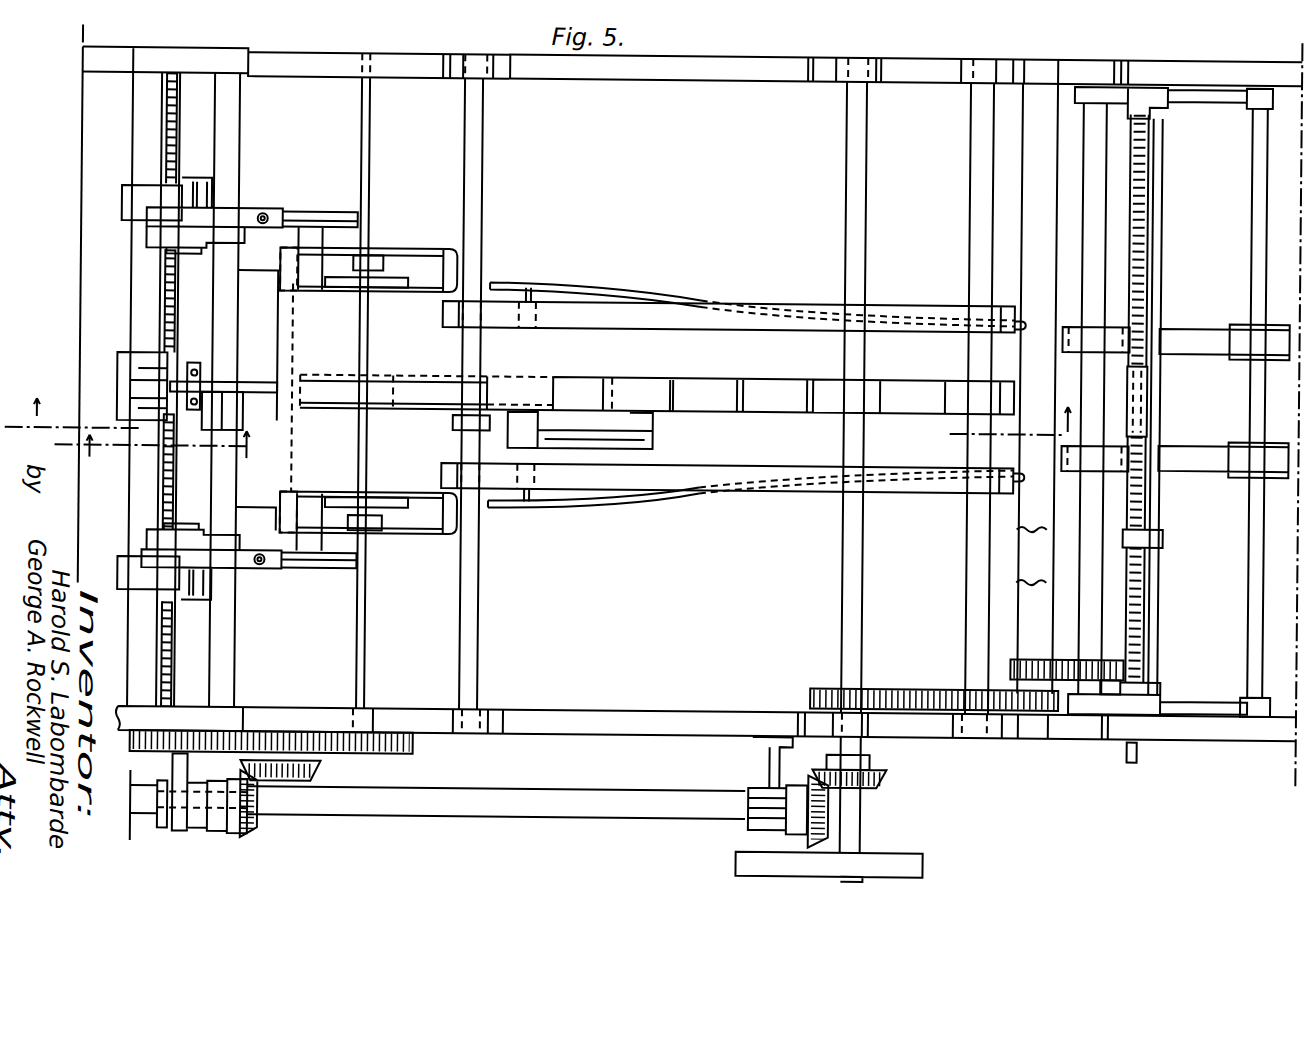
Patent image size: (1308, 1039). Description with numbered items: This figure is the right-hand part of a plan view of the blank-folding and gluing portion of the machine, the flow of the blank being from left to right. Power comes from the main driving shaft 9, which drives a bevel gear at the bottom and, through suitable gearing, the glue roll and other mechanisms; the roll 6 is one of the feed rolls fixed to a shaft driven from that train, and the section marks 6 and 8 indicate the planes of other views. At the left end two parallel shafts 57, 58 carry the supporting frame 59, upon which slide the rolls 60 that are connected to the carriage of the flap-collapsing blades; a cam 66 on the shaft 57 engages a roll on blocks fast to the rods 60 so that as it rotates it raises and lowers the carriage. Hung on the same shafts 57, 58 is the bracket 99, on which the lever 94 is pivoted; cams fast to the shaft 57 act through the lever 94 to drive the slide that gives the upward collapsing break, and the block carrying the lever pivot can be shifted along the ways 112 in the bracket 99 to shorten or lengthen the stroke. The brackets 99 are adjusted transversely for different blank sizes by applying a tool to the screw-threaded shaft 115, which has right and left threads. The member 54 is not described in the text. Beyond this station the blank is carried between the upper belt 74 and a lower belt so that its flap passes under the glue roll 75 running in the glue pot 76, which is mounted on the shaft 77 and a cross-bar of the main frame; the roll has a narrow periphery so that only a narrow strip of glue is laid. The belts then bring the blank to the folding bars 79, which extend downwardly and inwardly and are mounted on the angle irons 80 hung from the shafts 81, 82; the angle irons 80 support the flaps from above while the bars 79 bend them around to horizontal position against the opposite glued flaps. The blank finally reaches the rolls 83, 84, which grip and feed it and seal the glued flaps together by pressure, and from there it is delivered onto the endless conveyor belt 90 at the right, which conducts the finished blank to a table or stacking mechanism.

The roll 6 is at (542, 402).
The section line 8- 8 is at (153, 447).
The main driving shaft 9 is at (500, 820).
The plate 54 is at (264, 400).
The shaft 57 is at (227, 636).
The shaft 58 is at (142, 327).
The supporting frame 59 is at (146, 384).
The rolls 60 is at (194, 367).
The cam 66 is at (257, 392).
The upper belt 74 is at (692, 391).
The glue roll 75 is at (391, 283).
The glue pot 76 is at (443, 265).
The shaft 77 is at (359, 653).
The folding bars 79 is at (591, 284).
The angle irons 80 is at (583, 313).
The shaft 81 is at (472, 608).
The shaft 82 is at (967, 525).
The roll 83 is at (1028, 623).
The roll 84 is at (1029, 558).
The endless conveyor belt 90 is at (1182, 452).
The lever 94 is at (201, 242).
The bracket 99 is at (235, 221).
The ways 112 is at (328, 220).
The screw-threaded shaft 115 is at (163, 305).